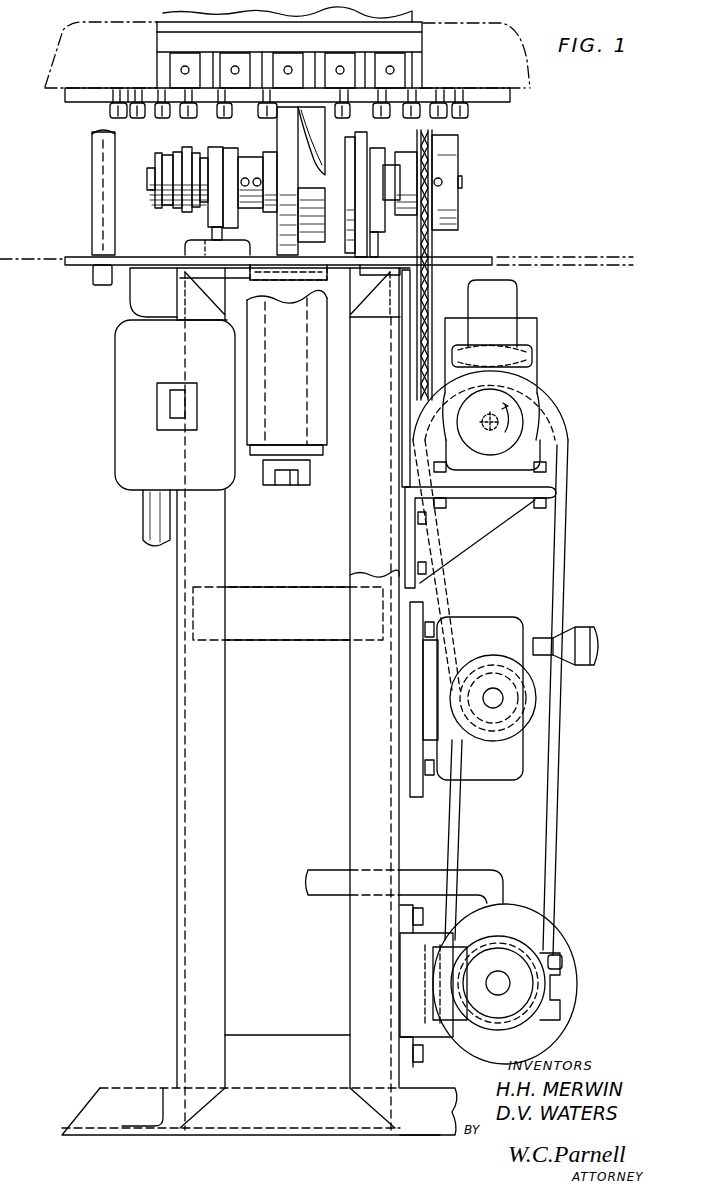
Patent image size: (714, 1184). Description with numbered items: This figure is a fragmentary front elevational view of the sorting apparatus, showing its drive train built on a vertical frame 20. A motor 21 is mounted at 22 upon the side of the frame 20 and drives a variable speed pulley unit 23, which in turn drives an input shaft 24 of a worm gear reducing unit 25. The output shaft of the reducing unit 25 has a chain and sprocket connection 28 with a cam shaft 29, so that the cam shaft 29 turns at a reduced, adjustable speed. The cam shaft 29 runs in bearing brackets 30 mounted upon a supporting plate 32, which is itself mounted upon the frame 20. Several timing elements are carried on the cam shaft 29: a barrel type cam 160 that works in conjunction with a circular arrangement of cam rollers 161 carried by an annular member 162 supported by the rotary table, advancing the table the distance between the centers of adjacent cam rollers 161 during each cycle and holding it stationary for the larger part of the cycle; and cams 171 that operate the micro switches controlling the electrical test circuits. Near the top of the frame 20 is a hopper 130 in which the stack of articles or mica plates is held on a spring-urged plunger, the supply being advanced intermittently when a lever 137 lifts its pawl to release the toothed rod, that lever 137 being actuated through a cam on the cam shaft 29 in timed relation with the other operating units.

The vertical frame 20 is at (151, 786).
The motor 21 is at (565, 948).
The motor mounting 22 is at (418, 983).
The variable speed pulley unit 23 is at (537, 702).
The input shaft 24 is at (490, 422).
The worm gear reducing unit 25 is at (505, 318).
The chain and sprocket connection 28 is at (433, 242).
The cam shaft 29 is at (470, 186).
The bearing brackets 30 is at (215, 213).
The supporting plate 32 is at (478, 258).
The hopper 130 is at (326, 432).
The lever 137 is at (270, 479).
The barrel type cam 160 is at (318, 222).
The cam rollers 161 is at (353, 114).
The annular member 162 is at (77, 99).
The cams 171 is at (177, 153).